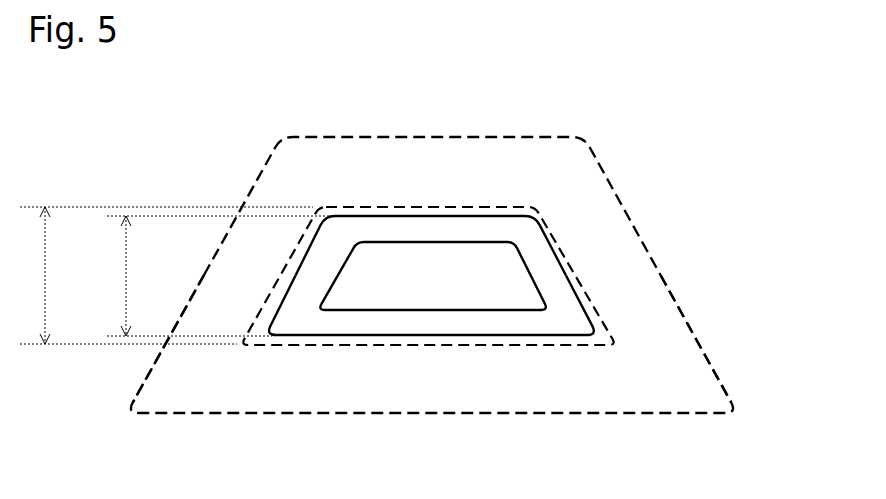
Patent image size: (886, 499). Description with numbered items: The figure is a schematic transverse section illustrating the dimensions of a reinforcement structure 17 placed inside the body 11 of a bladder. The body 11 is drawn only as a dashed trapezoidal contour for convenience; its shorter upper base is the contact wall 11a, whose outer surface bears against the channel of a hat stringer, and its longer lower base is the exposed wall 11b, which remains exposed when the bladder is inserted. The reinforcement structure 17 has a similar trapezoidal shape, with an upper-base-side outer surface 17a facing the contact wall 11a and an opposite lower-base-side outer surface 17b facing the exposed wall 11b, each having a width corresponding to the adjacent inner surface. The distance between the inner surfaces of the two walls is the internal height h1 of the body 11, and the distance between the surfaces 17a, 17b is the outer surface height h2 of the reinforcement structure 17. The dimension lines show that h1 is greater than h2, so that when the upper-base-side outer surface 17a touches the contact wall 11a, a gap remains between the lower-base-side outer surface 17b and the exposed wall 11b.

The body 11 is at (447, 274).
The contact wall 11a is at (438, 143).
The exposed wall 11b is at (448, 407).
The reinforcement structure 17 is at (472, 301).
The upper-base-side outer surface 17a is at (458, 200).
The lower-base-side outer surface 17b is at (522, 340).
The internal height of the body h1 is at (161, 275).
The outer surface height of the reinforcement structure h2 is at (210, 276).